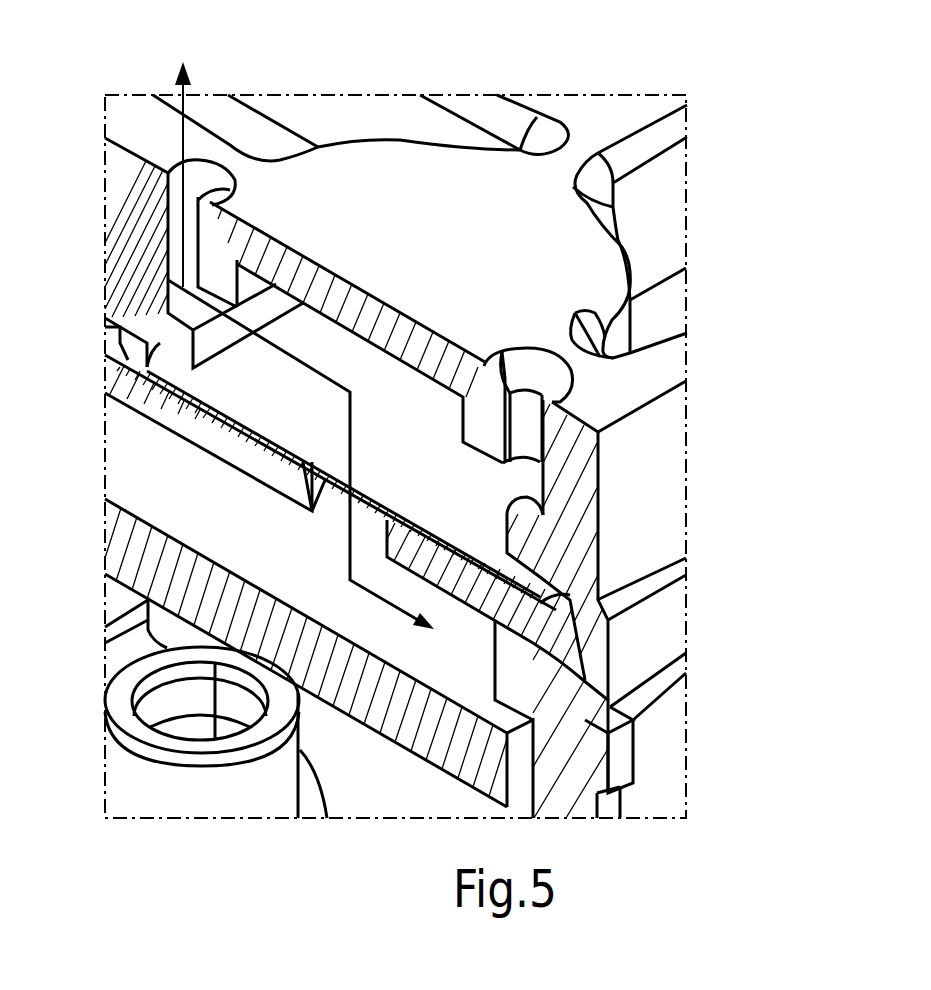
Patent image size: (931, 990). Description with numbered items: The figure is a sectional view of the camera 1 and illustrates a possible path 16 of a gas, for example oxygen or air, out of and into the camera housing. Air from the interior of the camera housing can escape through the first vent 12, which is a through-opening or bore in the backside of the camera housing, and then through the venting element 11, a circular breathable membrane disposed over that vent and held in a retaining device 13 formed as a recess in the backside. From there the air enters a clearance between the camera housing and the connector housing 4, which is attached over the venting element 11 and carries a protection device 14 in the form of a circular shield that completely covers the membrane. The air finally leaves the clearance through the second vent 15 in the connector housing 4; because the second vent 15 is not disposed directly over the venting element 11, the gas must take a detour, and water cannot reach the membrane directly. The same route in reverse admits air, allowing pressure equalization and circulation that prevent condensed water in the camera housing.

The camera 1 is at (716, 116).
The connector housing 4 is at (596, 102).
The venting element 11 is at (467, 500).
The first vent 12 is at (325, 501).
The retaining device 13 is at (467, 587).
The protection device 14 is at (535, 262).
The second vent 15 is at (220, 170).
The path 16 is at (350, 440).